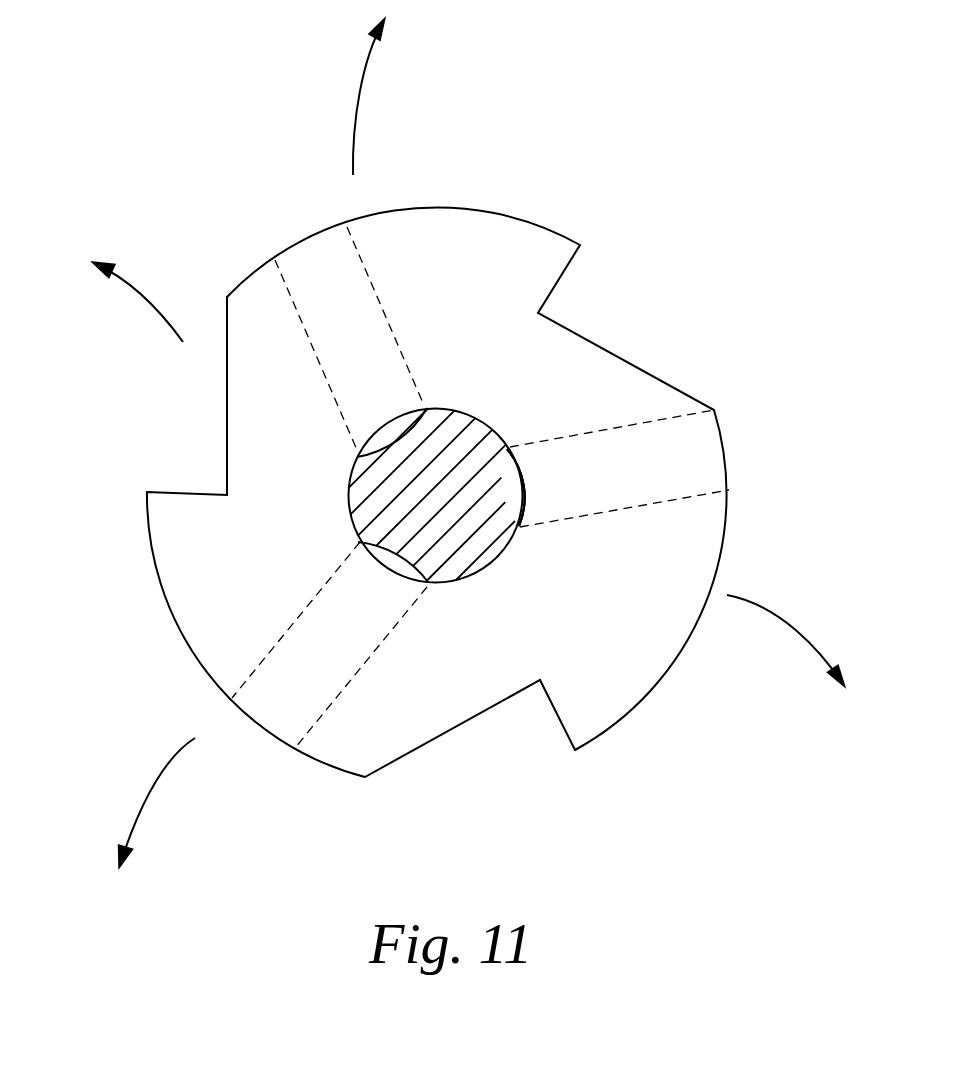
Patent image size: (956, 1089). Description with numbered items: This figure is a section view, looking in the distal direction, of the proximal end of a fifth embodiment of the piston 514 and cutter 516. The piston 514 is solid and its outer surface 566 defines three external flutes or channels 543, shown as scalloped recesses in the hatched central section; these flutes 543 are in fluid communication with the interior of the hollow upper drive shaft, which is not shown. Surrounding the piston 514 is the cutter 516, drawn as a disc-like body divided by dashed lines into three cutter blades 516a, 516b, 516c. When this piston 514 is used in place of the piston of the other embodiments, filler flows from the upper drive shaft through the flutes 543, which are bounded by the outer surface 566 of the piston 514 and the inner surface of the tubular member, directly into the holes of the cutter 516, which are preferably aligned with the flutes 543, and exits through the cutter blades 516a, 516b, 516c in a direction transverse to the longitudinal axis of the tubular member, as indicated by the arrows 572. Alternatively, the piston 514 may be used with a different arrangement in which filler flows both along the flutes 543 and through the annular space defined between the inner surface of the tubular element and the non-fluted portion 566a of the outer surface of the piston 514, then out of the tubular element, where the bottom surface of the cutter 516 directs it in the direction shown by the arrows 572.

The piston 514 is at (487, 423).
The cutter 516 is at (465, 250).
The cutter blade 516a is at (403, 222).
The cutter blade 516b is at (692, 508).
The cutter blade 516c is at (222, 620).
The flutes or channels 543 is at (390, 428).
The outer surface of the piston 566 is at (507, 467).
The non-fluted portion of the outer surface 566a is at (505, 557).
The arrows 572 is at (360, 100).